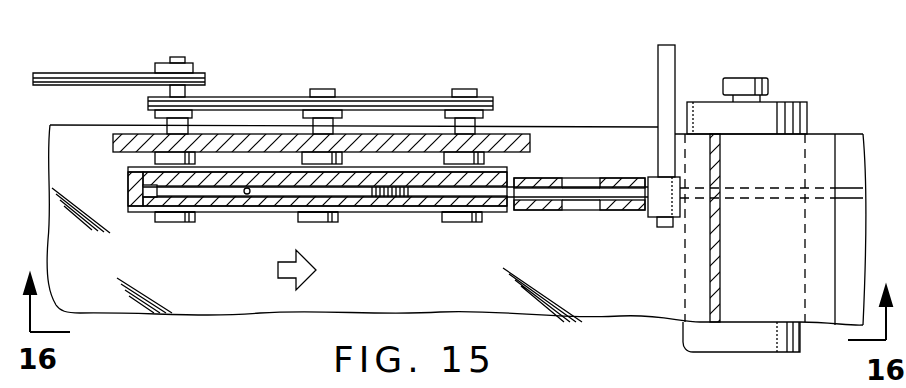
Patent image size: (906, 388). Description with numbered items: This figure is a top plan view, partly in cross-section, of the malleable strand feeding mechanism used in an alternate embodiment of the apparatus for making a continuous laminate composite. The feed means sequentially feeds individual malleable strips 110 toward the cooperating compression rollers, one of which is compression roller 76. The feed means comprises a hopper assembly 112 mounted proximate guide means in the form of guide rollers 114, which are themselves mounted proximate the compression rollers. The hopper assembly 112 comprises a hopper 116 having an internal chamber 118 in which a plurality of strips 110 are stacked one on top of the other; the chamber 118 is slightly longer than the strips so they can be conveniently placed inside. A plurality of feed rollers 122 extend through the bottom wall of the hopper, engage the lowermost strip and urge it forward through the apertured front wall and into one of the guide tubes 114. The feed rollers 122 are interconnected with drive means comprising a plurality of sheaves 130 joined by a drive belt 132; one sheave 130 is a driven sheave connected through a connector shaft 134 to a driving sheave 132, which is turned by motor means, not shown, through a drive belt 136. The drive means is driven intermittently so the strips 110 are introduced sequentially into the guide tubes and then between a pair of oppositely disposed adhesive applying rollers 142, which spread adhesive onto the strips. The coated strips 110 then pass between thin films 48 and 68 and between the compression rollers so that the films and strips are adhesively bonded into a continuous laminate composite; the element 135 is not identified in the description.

The thin film 48 is at (760, 300).
The thin film 68 is at (628, 303).
The compression roller 76 is at (702, 103).
The malleable strip 110 is at (398, 200).
The hopper assembly 112 is at (228, 216).
The guide roller 114 is at (550, 212).
The hopper 116 is at (128, 190).
The internal chamber 118 is at (247, 195).
The feed roller 122 is at (170, 221).
The sheave 130 is at (148, 100).
The drive belt 132 is at (398, 97).
The connector shaft 134 is at (197, 97).
The bolt head 135 is at (165, 63).
The drive belt 136 is at (80, 73).
The adhesive applying roller 142 is at (661, 214).